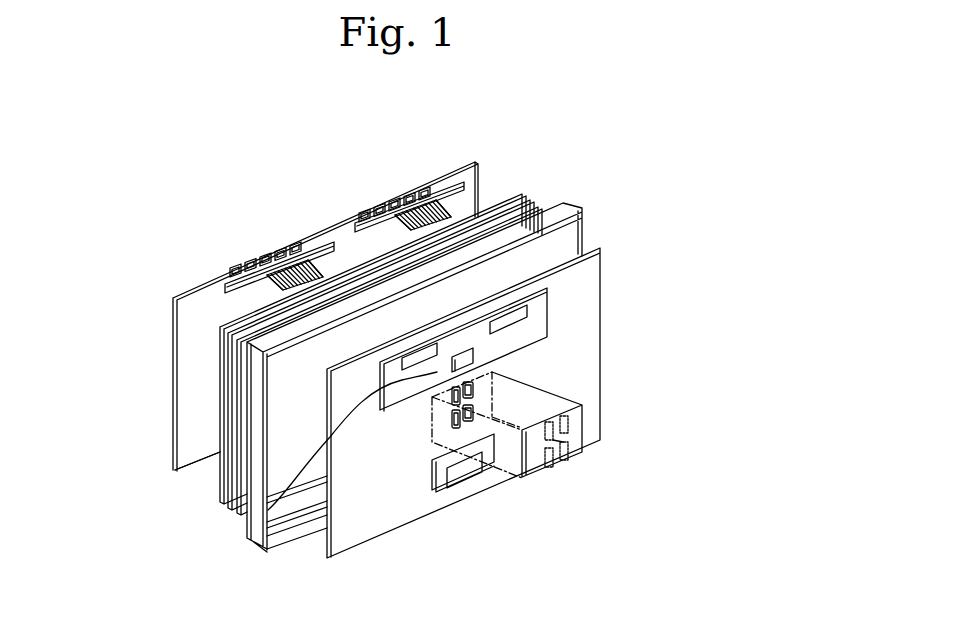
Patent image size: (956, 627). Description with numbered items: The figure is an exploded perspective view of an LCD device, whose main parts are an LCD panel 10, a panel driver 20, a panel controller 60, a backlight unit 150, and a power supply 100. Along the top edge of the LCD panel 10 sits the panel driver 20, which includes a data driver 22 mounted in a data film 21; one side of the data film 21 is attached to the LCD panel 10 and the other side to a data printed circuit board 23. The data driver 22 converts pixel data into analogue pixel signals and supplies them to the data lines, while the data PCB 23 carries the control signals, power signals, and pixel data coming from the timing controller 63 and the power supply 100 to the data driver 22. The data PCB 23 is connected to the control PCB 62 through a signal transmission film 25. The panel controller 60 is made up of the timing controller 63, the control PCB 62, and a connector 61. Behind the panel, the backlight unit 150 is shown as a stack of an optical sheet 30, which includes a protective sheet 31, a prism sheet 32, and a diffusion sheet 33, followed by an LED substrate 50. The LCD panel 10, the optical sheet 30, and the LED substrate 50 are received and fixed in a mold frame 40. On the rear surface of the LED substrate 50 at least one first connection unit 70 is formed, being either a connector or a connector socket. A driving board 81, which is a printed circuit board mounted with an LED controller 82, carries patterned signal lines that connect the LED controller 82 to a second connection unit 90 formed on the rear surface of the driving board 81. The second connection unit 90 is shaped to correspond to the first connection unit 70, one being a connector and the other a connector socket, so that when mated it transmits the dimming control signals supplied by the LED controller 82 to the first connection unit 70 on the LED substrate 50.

The LCD panel 10 is at (478, 168).
The panel driver 20 is at (353, 193).
The data film 21 is at (422, 187).
The data driver 22 is at (428, 187).
The data printed circuit board 23 is at (453, 187).
The signal transmission film 25 is at (395, 203).
The optical sheet 30 is at (476, 324).
The protective sheet 31 is at (523, 194).
The prism sheet 32 is at (532, 201).
The diffusion sheet 33 is at (541, 208).
The mold frame 40 is at (253, 342).
The LED substrate 50 is at (590, 272).
The panel controller 60 is at (372, 404).
The connector 61 is at (262, 514).
The control PCB 62 is at (327, 502).
The timing controller 63 is at (452, 381).
The first connection unit 70 is at (474, 390).
The driving board 81 is at (573, 430).
The LED controller 82 is at (570, 442).
The second connection unit 90 is at (583, 455).
The power supply 100 is at (475, 466).
The backlight unit 150 is at (477, 369).